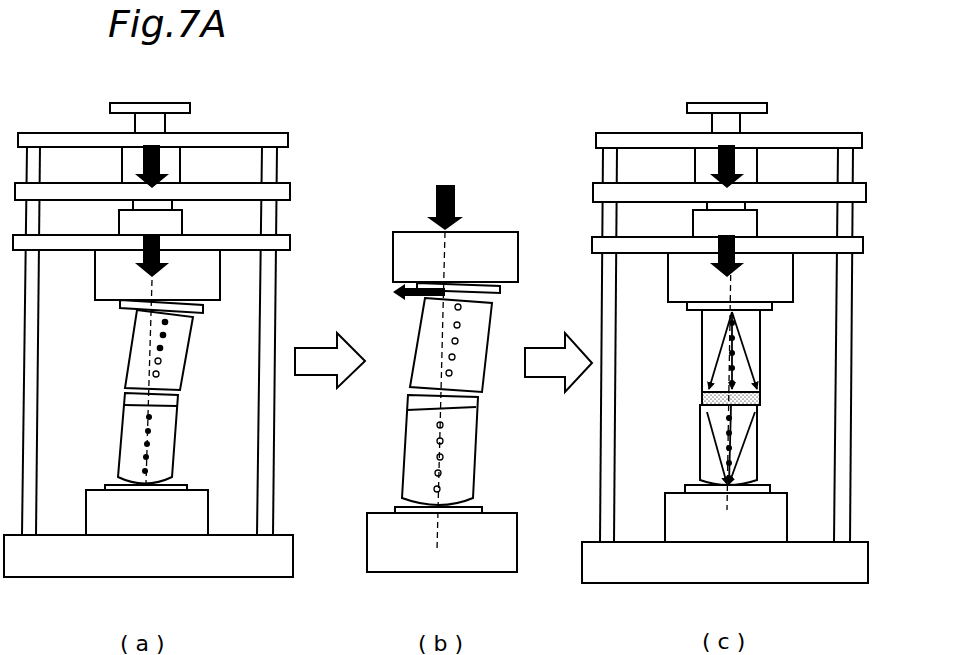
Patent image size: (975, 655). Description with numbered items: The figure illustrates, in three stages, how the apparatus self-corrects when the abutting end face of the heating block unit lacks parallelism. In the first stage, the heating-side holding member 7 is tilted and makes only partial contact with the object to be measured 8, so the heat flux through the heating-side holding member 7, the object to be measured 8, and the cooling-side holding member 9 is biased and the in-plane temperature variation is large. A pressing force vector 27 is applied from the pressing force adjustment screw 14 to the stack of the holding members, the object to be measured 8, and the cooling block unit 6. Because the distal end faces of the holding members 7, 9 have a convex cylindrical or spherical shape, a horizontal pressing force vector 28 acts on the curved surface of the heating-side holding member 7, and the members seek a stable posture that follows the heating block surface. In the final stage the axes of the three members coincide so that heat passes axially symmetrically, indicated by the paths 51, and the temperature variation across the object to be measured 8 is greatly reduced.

The cooling block unit 6 is at (173, 525).
The heating-side holding member 7 is at (180, 350).
The object to be measured 8 is at (177, 402).
The cooling-side holding member 9 is at (173, 447).
The pressing force adjustment screw 14 is at (172, 145).
The pressing force vector 27 is at (162, 158).
The horizontal pressing force vector 28 is at (400, 288).
The load paths 51 is at (748, 447).